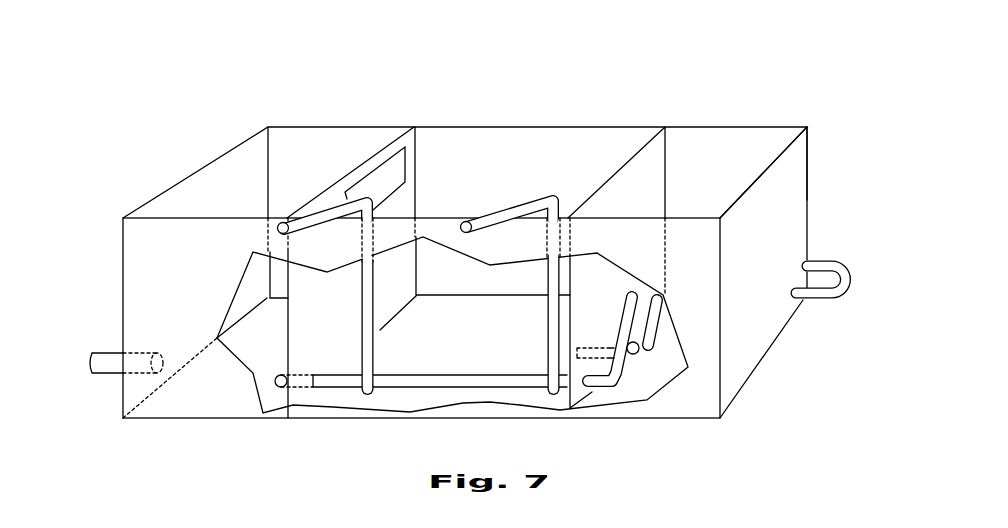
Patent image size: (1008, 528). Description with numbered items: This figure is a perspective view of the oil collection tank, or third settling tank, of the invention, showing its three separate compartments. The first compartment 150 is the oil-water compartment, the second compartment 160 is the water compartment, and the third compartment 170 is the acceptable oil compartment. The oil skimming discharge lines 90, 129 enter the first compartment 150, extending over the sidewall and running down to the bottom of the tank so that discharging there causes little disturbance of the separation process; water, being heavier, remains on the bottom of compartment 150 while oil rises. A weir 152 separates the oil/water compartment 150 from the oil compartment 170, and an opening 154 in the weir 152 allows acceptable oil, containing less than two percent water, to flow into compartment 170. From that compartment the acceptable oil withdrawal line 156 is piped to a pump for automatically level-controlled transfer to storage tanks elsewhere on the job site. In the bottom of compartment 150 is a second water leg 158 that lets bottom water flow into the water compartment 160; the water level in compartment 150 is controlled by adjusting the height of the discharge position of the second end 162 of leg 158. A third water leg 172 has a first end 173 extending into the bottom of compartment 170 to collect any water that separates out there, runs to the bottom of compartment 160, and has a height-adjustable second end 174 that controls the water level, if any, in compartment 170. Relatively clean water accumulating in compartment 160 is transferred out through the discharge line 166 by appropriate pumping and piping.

The oil skimming discharge line 90 is at (500, 207).
The oil skimming discharge line 129 is at (317, 220).
The first compartment 150 is at (517, 168).
The weir 152 is at (330, 202).
The opening 154 is at (390, 180).
The acceptable oil withdrawal line 156 is at (112, 358).
The second water leg 158 is at (602, 346).
The second compartment 160 is at (747, 153).
The second end 162 is at (657, 317).
The discharge line 166 is at (837, 260).
The third compartment 170 is at (337, 157).
The third water leg 172 is at (487, 373).
The first end 173 is at (280, 377).
The second end 174 is at (630, 318).